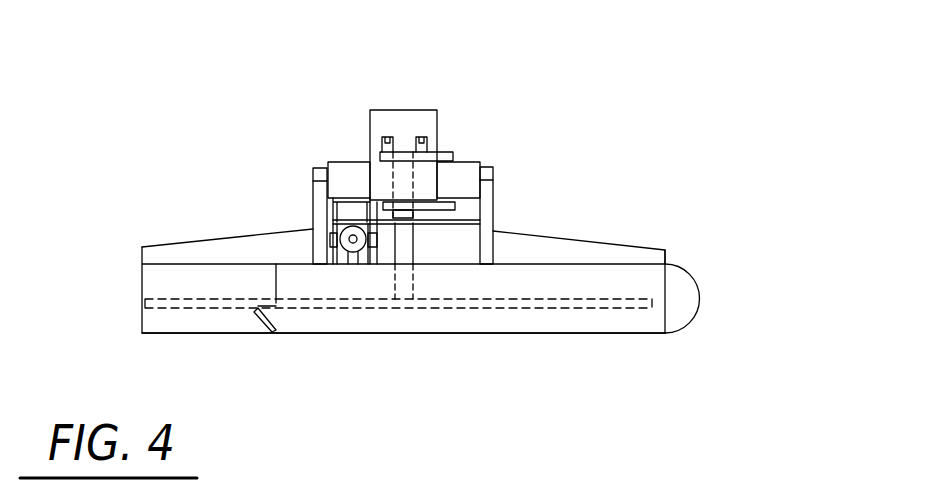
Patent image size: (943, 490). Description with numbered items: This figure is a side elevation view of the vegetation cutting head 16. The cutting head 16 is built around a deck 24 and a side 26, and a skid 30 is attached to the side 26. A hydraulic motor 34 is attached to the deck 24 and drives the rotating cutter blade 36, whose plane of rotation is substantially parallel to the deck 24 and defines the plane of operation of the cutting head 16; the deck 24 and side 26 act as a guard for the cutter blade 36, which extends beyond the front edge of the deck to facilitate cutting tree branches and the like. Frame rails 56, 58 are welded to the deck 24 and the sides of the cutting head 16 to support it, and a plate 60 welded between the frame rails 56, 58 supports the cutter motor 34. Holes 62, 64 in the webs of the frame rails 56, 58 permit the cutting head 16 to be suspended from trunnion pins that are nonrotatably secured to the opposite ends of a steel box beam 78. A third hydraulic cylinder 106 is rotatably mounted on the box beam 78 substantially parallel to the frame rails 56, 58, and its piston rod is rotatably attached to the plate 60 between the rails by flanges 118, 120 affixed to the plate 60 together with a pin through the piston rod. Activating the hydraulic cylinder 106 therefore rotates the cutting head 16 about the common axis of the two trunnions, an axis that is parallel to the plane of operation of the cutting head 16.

The cutting head 16 is at (543, 282).
The deck 24 is at (557, 263).
The side 26 is at (480, 335).
The skid 30 is at (699, 290).
The hydraulic motor 34 is at (402, 110).
The cutter blade 36 is at (627, 312).
The frame rail 56 is at (322, 165).
The frame rail 58 is at (493, 160).
The plate 60 is at (467, 210).
The hole 62 is at (313, 182).
The hole 64 is at (494, 177).
The box beam 78 is at (355, 162).
The hydraulic cylinder 106 is at (352, 268).
The flange 118 is at (333, 256).
The flange 120 is at (376, 264).